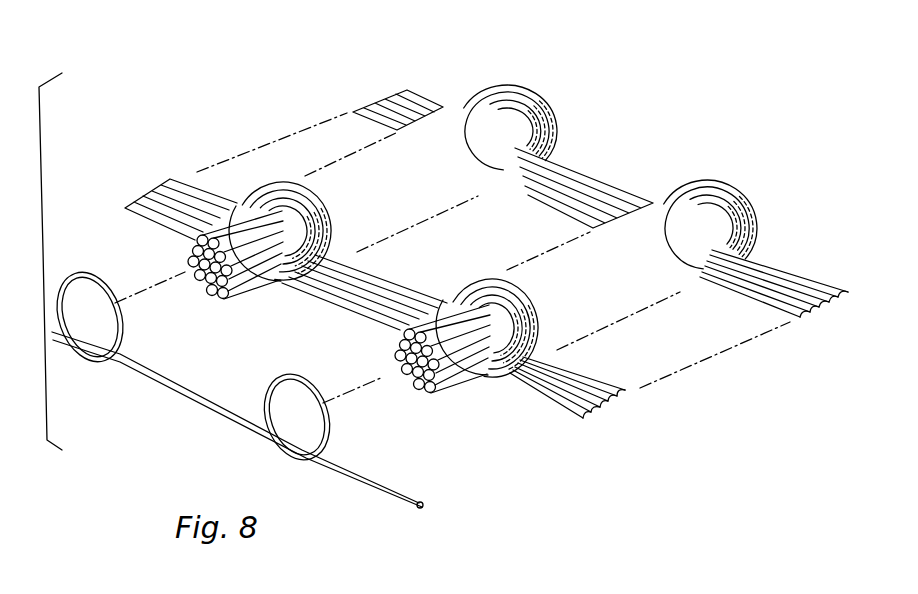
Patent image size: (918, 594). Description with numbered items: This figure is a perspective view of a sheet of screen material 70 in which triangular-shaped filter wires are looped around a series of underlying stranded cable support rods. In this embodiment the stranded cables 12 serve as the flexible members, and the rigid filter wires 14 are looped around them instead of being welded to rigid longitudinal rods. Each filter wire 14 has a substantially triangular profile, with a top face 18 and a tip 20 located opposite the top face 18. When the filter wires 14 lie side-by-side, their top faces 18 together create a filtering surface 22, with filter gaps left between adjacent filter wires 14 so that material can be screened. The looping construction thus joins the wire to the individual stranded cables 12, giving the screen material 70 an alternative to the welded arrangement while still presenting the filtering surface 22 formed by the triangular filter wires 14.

The stranded cable 12 is at (402, 347).
The filter wire 14 is at (585, 418).
The top face 18 is at (421, 507).
The tip 20 is at (420, 503).
The filtering surface 22 is at (532, 411).
The screen material 70 is at (634, 100).